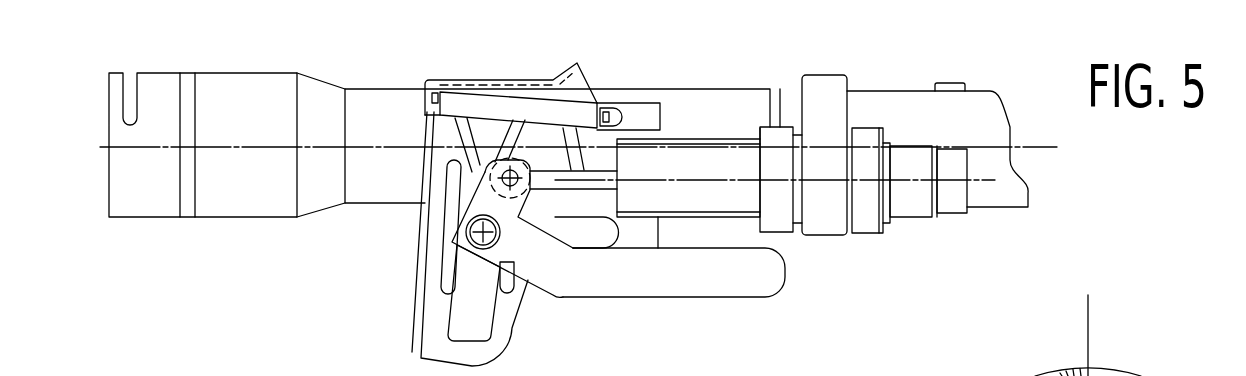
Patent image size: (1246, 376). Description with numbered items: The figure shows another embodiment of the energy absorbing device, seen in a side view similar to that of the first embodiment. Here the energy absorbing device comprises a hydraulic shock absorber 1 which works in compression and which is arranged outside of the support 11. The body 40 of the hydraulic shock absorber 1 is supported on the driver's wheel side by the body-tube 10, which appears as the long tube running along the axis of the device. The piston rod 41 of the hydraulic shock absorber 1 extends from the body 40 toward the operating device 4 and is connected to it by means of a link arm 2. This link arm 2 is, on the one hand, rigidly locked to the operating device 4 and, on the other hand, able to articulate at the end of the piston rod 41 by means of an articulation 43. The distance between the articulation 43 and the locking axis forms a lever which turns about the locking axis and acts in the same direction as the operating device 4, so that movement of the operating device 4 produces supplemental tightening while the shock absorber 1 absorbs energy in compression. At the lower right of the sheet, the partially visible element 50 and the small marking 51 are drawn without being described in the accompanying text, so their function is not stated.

The hydraulic shock absorber 1 is at (715, 163).
The link arm 2 is at (487, 202).
The operating device 4 is at (685, 278).
The body-tube 10 is at (682, 103).
The support 11 is at (587, 75).
The body 40 is at (908, 207).
The piston rod 41 is at (577, 200).
The articulation 43 is at (503, 163).
The disc 50 is at (1172, 375).
The marking 51 is at (988, 375).